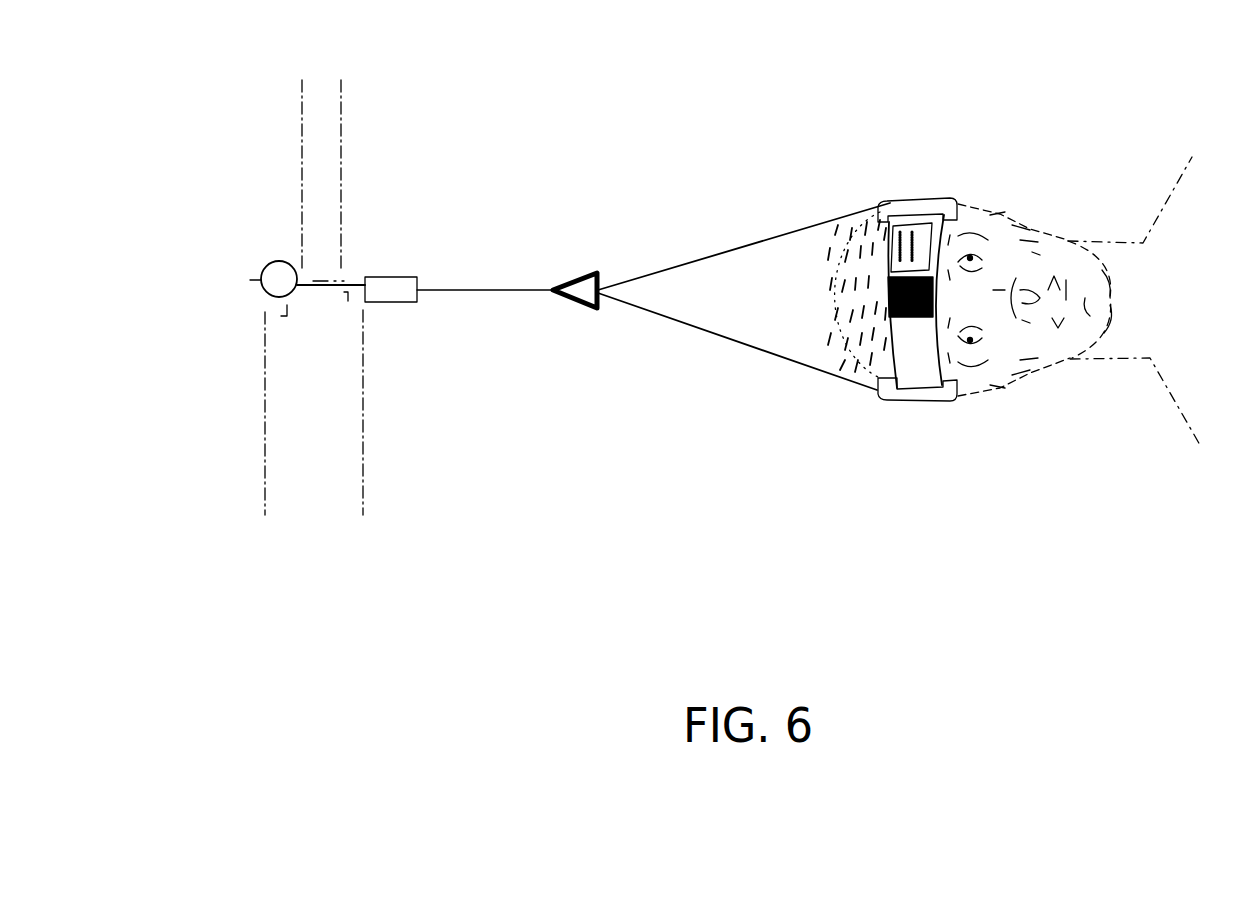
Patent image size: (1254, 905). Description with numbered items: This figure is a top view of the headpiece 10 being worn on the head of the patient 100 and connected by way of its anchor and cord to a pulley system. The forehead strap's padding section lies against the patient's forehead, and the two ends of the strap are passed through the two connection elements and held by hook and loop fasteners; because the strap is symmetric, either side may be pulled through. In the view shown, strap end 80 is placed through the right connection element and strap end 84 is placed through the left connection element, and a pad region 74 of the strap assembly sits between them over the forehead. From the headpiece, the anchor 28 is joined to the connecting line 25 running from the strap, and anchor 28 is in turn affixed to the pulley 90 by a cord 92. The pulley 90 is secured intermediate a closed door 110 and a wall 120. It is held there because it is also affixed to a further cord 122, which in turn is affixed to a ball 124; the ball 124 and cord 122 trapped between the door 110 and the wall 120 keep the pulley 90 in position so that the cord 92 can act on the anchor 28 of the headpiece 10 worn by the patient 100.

The headpiece 10 is at (930, 436).
The cable 25 is at (767, 240).
The anchor 28 is at (588, 273).
The sensor pad 74 is at (885, 307).
The strap end 80 is at (907, 350).
The strap end 84 is at (887, 205).
The pulley 90 is at (392, 303).
The cord 92 is at (487, 290).
The patient 100 is at (1228, 318).
The door 110 is at (322, 213).
The wall 120 is at (313, 350).
The cord 122 is at (314, 289).
The ball 124 is at (276, 260).